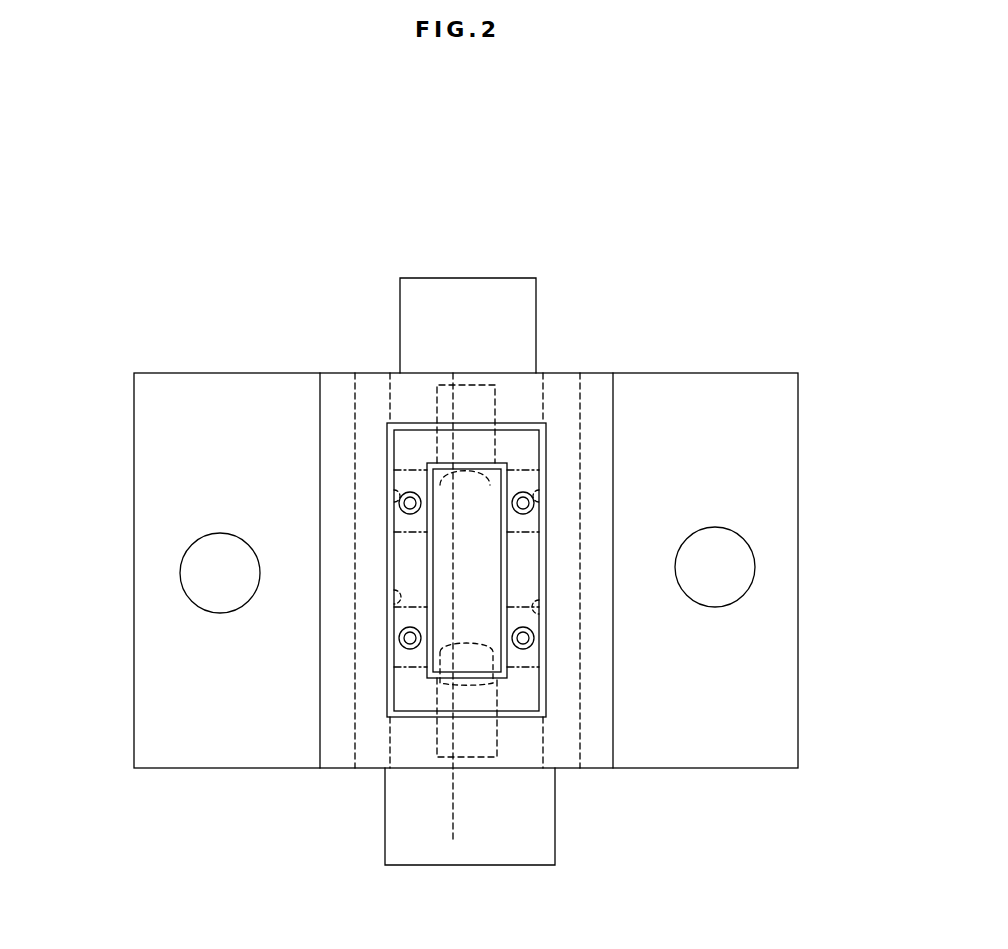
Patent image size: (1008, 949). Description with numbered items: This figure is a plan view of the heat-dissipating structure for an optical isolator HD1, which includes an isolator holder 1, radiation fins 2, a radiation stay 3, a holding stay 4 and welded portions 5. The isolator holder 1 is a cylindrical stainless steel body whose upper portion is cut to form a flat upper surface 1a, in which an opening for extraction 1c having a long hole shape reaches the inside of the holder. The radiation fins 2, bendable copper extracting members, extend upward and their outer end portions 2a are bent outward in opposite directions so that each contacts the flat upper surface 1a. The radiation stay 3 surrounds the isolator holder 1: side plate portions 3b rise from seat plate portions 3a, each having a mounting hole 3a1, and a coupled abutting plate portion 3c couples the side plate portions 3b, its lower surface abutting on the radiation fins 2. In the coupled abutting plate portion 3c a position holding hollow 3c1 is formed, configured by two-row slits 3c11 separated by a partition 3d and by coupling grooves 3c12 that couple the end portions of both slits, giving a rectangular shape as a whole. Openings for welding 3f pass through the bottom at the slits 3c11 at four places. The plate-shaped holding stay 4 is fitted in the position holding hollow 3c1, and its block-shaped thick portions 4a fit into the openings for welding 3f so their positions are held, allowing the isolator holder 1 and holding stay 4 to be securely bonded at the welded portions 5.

The heat-dissipating structure for an optical isolator HD1 is at (489, 168).
The isolator holder 1 is at (370, 397).
The flat upper surface 1a is at (420, 407).
The opening for extraction 1c is at (453, 373).
The radiation fins 2 is at (467, 375).
The outer end portions 2a is at (478, 375).
The radiation stay 3 is at (157, 367).
The seat plate portions 3a is at (178, 415).
The mounting hole 3a1 is at (210, 573).
The side plate portions 3b is at (340, 765).
The coupled abutting plate portion 3c is at (413, 732).
The position holding hollow 3c1 is at (515, 424).
The two-row slits 3c11 is at (390, 607).
The coupling grooves 3c12 is at (417, 710).
The partition 3d is at (470, 589).
The openings for welding 3f is at (395, 511).
The holding stay 4 is at (402, 442).
The thick portions 4a is at (395, 476).
The welded portions 5 is at (400, 501).